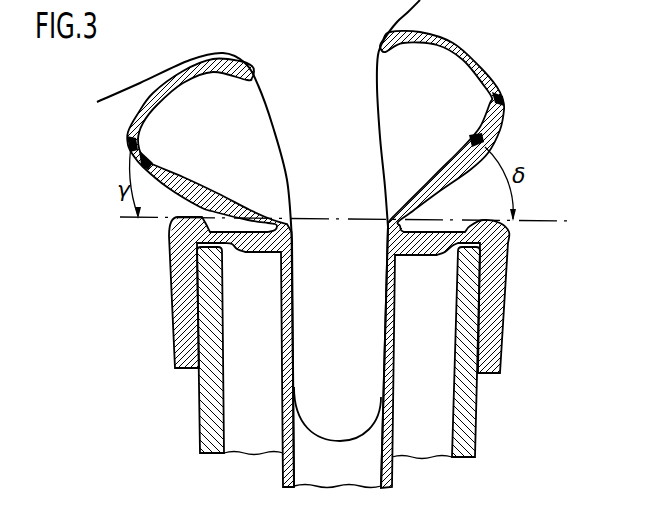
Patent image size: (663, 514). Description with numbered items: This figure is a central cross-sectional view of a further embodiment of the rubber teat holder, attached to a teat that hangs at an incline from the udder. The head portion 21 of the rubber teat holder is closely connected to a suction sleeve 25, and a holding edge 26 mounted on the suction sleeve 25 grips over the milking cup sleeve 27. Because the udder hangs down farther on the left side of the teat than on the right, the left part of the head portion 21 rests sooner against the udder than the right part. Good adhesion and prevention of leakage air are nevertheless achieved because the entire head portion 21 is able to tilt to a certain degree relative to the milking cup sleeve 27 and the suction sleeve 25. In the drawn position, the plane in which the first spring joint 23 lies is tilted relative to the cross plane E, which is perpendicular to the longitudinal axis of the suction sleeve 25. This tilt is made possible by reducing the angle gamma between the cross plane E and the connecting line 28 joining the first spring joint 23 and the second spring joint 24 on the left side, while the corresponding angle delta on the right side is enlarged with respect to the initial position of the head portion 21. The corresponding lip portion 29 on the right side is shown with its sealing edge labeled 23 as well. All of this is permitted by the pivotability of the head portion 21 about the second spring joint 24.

The head portion 21 is at (480, 63).
The first spring joint 23 is at (503, 100).
The second spring joint 24 is at (390, 220).
The suction sleeve 25 is at (392, 474).
The holding edge 26 is at (503, 327).
The milking cup sleeve 27 is at (467, 398).
The connecting line 28 is at (157, 158).
The lip portion 29 is at (478, 122).
The cross plane E is at (356, 223).